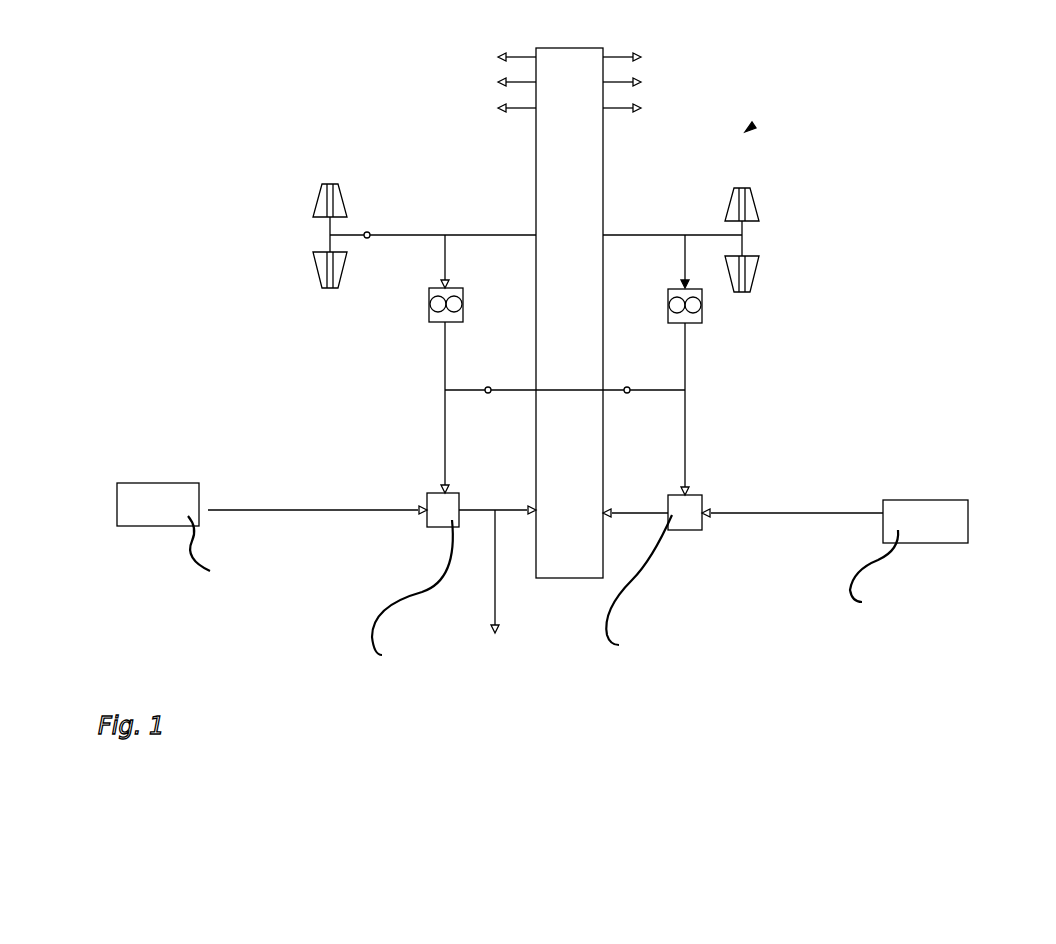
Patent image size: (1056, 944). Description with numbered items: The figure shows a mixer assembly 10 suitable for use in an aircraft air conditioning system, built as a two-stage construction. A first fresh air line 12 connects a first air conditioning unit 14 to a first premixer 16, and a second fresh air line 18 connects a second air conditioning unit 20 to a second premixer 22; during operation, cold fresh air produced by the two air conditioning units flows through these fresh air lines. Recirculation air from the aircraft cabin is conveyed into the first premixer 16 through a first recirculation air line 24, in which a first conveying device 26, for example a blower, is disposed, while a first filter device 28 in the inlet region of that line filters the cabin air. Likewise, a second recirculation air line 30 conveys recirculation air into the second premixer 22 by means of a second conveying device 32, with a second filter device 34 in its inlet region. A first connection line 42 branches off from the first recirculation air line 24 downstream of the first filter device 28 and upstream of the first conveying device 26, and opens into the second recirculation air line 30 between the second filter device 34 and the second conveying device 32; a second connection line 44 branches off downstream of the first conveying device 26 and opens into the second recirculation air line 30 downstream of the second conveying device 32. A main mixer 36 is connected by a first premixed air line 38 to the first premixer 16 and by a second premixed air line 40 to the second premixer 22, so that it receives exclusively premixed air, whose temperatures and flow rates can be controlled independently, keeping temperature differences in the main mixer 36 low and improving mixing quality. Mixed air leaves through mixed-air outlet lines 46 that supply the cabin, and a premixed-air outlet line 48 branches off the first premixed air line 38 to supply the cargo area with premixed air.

The mixer assembly 10 is at (756, 130).
The first fresh air line 12 is at (299, 510).
The first air conditioning unit 14 is at (152, 490).
The first premixer 16 is at (437, 518).
The second fresh air line 18 is at (796, 513).
The second air conditioning unit 20 is at (920, 506).
The second premixer 22 is at (683, 533).
The first recirculation air line 24 is at (395, 235).
The first conveying device 26 is at (430, 307).
The first filter device 28 is at (323, 184).
The second recirculation air line 30 is at (698, 235).
The second conveying device 32 is at (700, 320).
The second filter device 34 is at (760, 198).
The main mixer 36 is at (552, 290).
The first premixed air line 38 is at (475, 508).
The second premixed air line 40 is at (628, 512).
The first connection line 42 is at (630, 235).
The second connection line 44 is at (554, 390).
The mixed-air outlet lines 46 is at (500, 107).
The premixed-air outlet line 48 is at (500, 605).